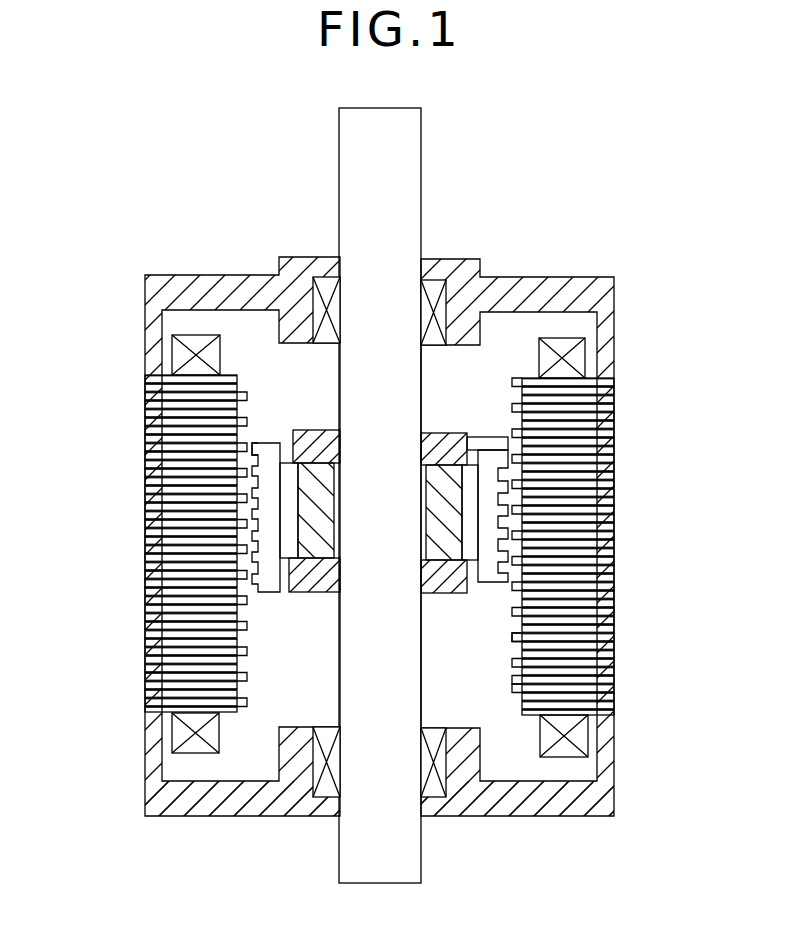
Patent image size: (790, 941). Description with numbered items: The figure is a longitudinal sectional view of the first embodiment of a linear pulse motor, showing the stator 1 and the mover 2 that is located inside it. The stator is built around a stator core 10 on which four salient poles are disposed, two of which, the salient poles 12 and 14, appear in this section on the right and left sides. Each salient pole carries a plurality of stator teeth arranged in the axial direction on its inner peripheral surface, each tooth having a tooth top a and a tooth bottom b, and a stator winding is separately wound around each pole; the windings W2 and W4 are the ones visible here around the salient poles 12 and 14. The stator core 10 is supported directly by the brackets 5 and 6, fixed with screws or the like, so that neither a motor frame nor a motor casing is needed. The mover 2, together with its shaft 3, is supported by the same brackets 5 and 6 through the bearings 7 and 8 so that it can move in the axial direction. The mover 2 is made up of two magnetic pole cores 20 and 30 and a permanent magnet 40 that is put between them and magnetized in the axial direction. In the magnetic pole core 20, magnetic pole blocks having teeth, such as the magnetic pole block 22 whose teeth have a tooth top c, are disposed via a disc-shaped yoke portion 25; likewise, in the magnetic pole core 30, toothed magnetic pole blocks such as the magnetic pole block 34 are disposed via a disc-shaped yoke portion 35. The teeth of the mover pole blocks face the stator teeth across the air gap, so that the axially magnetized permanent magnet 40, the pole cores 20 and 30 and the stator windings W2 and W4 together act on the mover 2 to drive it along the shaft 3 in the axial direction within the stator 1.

The stator 1 is at (217, 270).
The mover 2 is at (327, 425).
The shaft 3 is at (340, 160).
The bracket 5 is at (589, 295).
The bracket 6 is at (597, 800).
The bearing 7 is at (435, 292).
The bearing 8 is at (434, 790).
The stator core 10 is at (624, 578).
The salient pole 12 is at (565, 633).
The salient pole 14 is at (165, 617).
The magnetic pole core 20 is at (491, 424).
The magnetic pole block 22 is at (485, 504).
The disc-shaped yoke portion 25 is at (443, 432).
The magnetic pole core 30 is at (263, 600).
The magnetic pole block 34 is at (272, 528).
The disc-shaped yoke portion 35 is at (313, 594).
The permanent magnet 40 is at (300, 493).
The stator winding W2 is at (575, 356).
The stator winding W4 is at (187, 353).
The tooth top a is at (517, 681).
The tooth bottom b is at (517, 640).
The tooth top c is at (267, 450).